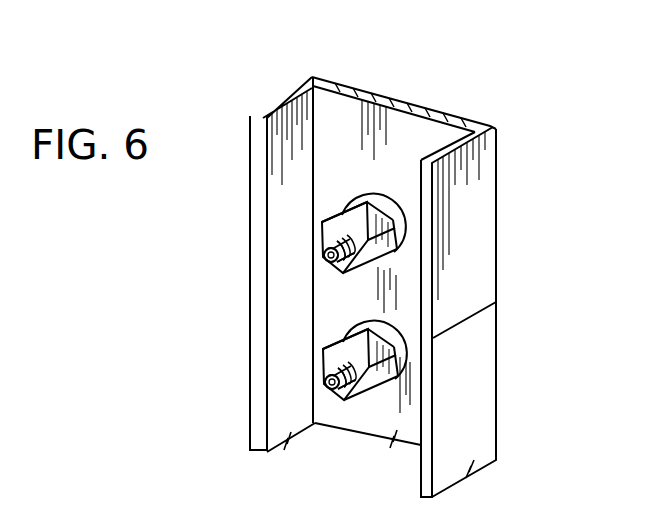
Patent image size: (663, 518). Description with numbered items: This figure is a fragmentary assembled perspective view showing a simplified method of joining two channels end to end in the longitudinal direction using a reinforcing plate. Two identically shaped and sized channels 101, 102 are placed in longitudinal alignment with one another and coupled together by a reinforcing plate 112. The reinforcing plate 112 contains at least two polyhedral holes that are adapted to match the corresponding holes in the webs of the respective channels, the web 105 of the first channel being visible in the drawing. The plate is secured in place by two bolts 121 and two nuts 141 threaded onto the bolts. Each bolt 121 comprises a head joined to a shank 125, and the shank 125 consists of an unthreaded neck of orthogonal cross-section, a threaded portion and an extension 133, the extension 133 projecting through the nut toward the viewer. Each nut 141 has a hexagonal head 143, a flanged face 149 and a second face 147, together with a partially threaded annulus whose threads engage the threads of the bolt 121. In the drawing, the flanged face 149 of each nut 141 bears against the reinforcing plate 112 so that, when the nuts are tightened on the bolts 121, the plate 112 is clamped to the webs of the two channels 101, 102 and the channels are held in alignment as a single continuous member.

The channel 101 is at (503, 138).
The channel 102 is at (494, 463).
The web 105 is at (378, 96).
The reinforcing plate 112 is at (404, 294).
The bolt 121 is at (326, 257).
The shank 125 is at (322, 262).
The extension 133 is at (320, 240).
The nut 141 is at (333, 216).
The hexagonal head 143 is at (369, 200).
The second face 147 is at (368, 242).
The flanged face 149 is at (405, 214).